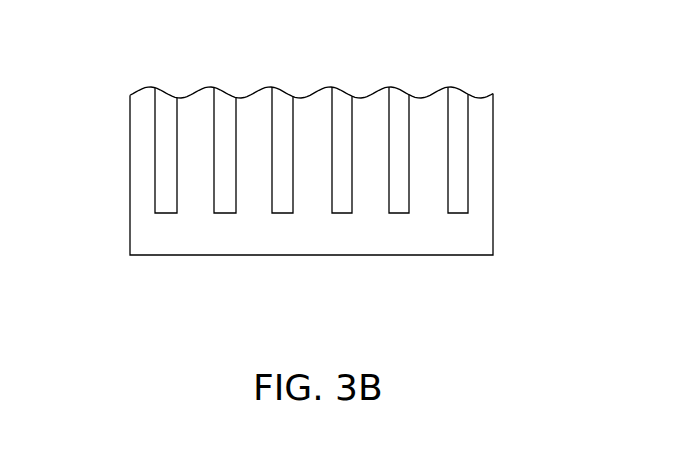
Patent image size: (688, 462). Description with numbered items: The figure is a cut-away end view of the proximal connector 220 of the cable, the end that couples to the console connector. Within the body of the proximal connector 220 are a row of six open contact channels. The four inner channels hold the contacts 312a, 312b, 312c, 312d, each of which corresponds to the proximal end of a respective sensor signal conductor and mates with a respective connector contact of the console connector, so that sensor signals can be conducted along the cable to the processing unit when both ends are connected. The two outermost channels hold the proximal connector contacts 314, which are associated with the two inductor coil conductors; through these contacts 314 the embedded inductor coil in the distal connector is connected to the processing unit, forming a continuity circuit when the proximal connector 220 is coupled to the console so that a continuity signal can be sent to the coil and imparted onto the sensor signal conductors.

The proximal connector 220 is at (321, 166).
The contact 312a is at (220, 107).
The contact 312b is at (283, 204).
The contact 312c is at (340, 107).
The contact 312d is at (400, 204).
The proximal connector contacts 314 is at (165, 153).